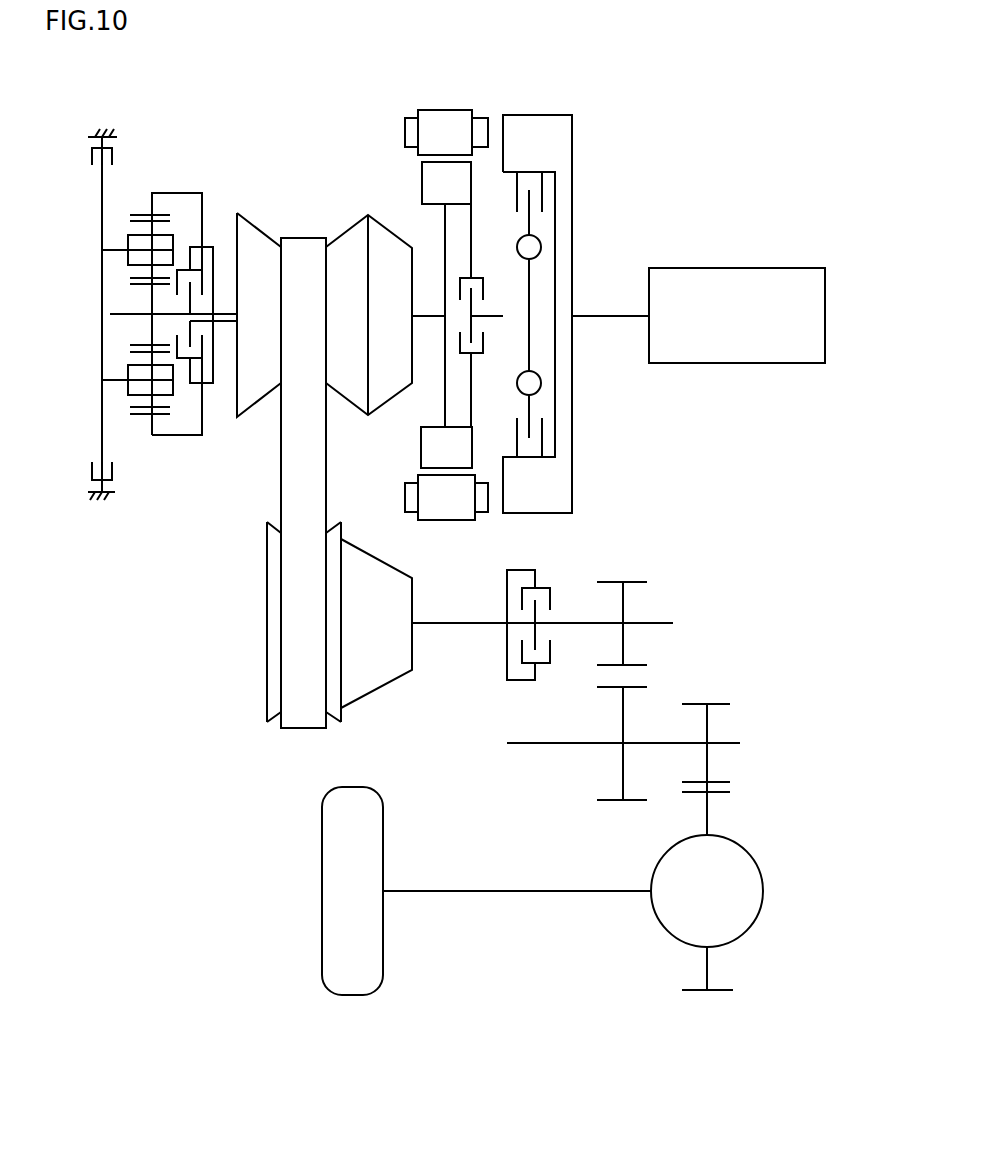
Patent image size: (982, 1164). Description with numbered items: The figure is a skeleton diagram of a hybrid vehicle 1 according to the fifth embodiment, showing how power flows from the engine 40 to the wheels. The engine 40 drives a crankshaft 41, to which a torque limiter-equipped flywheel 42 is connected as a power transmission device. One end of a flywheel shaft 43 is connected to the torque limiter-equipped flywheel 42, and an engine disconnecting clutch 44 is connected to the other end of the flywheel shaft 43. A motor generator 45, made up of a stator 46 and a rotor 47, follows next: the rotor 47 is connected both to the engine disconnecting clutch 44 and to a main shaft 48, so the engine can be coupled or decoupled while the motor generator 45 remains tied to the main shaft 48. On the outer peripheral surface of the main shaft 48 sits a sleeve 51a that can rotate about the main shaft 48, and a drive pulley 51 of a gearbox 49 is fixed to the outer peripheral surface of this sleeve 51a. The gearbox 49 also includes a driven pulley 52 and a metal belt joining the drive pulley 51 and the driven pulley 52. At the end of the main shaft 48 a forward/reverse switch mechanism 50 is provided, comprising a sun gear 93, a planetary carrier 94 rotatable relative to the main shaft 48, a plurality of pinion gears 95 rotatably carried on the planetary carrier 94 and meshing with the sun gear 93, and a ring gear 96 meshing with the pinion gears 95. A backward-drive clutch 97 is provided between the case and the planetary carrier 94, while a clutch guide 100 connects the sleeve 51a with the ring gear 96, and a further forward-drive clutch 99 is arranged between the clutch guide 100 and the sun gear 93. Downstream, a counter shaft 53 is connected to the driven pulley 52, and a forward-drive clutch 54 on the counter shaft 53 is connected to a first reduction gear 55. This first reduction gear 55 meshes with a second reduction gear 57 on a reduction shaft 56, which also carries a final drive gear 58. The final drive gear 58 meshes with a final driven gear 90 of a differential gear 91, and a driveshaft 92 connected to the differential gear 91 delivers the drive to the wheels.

The hybrid vehicle 1 is at (660, 97).
The engine 40 is at (735, 365).
The crankshaft 41 is at (607, 315).
The torque limiter-equipped flywheel 42 is at (543, 100).
The flywheel shaft 43 is at (507, 317).
The engine disconnecting clutch 44 is at (485, 342).
The motor generator 45 is at (446, 280).
The stator 46 is at (430, 122).
The rotor 47 is at (455, 172).
The main shaft 48 is at (433, 313).
The gearbox 49 is at (309, 180).
The forward/reverse switch mechanism 50 is at (169, 137).
The drive pulley 51 is at (252, 390).
The sleeve 51a is at (225, 328).
The driven pulley 52 is at (277, 720).
The counter shaft 53 is at (460, 626).
The forward-drive clutch 54 is at (562, 579).
The first reduction gear 55 is at (632, 580).
The reduction shaft 56 is at (550, 745).
The second reduction gear 57 is at (612, 803).
The final drive gear 58 is at (714, 703).
The final driven gear 90 is at (722, 793).
The differential gear 91 is at (743, 933).
The driveshaft 92 is at (513, 893).
The sun gear 93 is at (148, 289).
The planetary carrier 94 is at (102, 363).
The pinion gears 95 is at (143, 222).
The ring gear 96 is at (143, 214).
The backward-drive clutch 97 is at (92, 158).
The clutch 99 is at (183, 360).
The clutch guide 100 is at (212, 247).